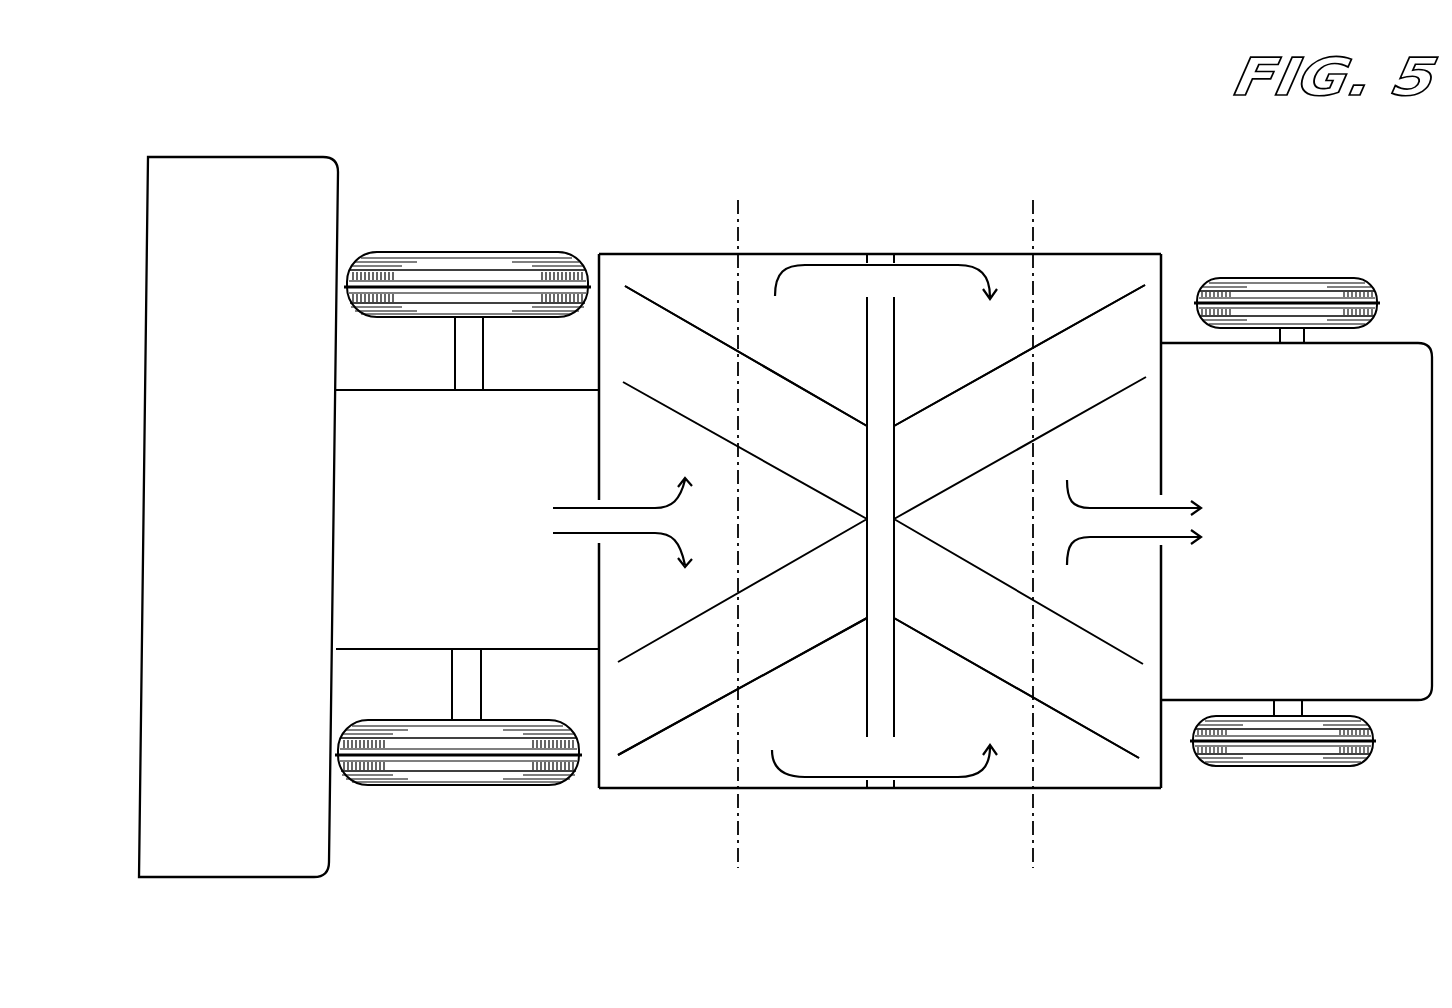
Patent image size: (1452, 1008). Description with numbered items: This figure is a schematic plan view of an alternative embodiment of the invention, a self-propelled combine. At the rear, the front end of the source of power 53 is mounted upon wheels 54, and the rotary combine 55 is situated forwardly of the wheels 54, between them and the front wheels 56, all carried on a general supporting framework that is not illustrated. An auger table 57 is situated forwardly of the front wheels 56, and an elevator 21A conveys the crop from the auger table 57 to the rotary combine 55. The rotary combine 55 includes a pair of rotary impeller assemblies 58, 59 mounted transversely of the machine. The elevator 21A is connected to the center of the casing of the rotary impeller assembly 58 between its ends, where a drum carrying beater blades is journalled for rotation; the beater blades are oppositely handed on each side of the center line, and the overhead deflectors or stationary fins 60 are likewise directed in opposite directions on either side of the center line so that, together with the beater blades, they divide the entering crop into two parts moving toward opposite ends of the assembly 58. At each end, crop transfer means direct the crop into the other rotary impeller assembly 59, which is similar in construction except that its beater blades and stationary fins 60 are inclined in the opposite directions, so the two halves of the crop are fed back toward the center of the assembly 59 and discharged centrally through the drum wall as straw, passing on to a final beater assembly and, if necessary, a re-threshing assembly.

The auger table 57 is at (284, 168).
The front wheels 56 is at (547, 259).
The elevator 21A is at (428, 399).
The rotary combine 55 is at (908, 212).
The rotary impeller assembly 58 is at (645, 262).
The rotary impeller assembly 59 is at (1106, 254).
The stationary fins 60 is at (833, 372).
The wheels 54 is at (1300, 285).
The source of power 53 is at (1400, 357).